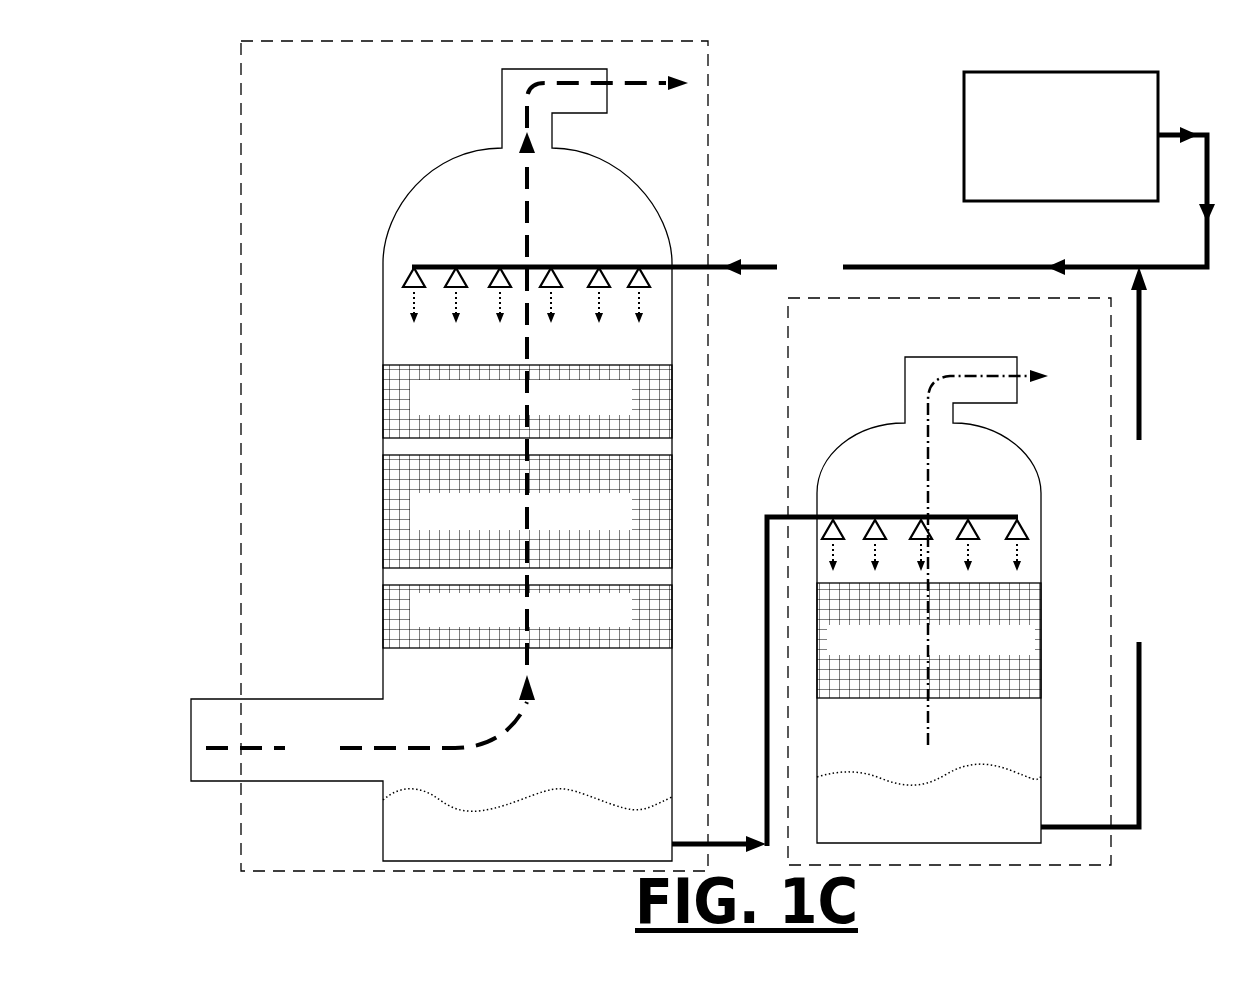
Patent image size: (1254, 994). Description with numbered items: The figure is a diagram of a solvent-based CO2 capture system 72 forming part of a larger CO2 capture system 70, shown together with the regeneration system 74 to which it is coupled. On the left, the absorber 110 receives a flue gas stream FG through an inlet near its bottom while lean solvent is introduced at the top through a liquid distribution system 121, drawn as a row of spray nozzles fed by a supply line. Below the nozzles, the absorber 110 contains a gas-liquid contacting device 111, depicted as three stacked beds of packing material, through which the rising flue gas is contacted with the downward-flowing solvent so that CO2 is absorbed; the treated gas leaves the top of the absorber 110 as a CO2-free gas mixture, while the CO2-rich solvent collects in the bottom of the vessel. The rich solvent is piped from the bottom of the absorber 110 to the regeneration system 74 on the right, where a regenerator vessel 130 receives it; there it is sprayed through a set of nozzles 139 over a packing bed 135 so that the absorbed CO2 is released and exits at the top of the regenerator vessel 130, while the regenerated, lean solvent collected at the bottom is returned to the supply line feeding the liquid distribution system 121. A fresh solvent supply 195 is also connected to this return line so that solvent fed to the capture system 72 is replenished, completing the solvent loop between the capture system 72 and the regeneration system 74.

The CO2 capture system 70 is at (190, 168).
The capture system 72 is at (273, 72).
The regeneration system 74 is at (820, 329).
The absorber 110 is at (383, 308).
The gas-liquid contacting device 111 is at (415, 380).
The liquid distribution system 121 is at (650, 302).
The stripper vessel 130 is at (885, 445).
The stripper packing 135 is at (997, 670).
The stripper spray nozzles 139 is at (1030, 552).
The regenerator vessel 195 is at (1005, 83).